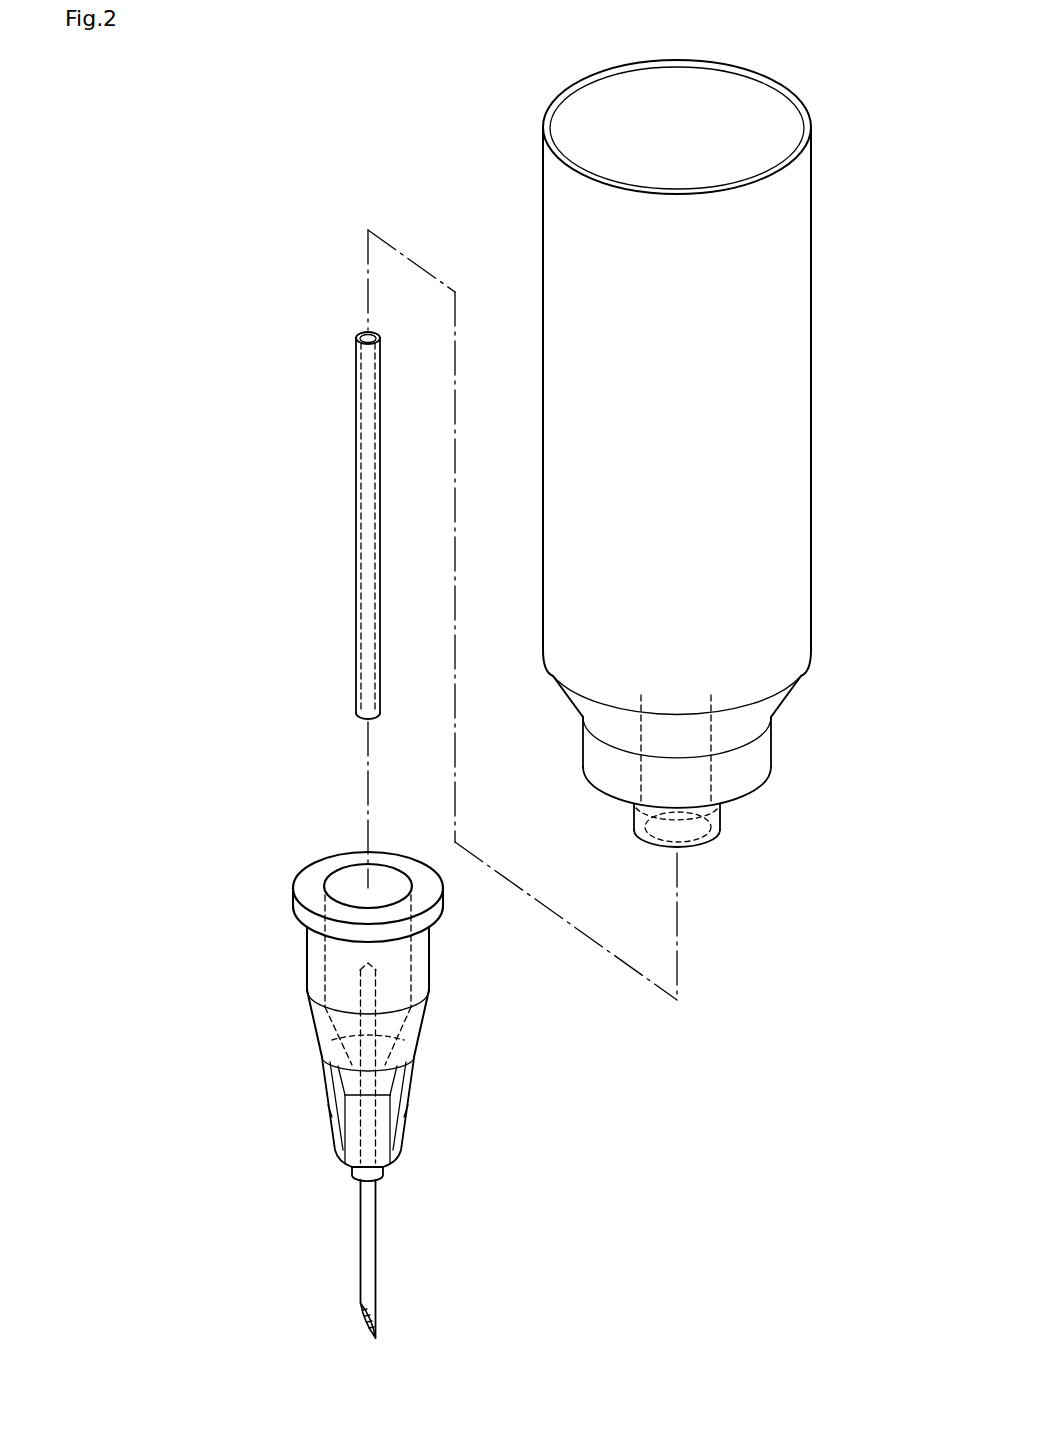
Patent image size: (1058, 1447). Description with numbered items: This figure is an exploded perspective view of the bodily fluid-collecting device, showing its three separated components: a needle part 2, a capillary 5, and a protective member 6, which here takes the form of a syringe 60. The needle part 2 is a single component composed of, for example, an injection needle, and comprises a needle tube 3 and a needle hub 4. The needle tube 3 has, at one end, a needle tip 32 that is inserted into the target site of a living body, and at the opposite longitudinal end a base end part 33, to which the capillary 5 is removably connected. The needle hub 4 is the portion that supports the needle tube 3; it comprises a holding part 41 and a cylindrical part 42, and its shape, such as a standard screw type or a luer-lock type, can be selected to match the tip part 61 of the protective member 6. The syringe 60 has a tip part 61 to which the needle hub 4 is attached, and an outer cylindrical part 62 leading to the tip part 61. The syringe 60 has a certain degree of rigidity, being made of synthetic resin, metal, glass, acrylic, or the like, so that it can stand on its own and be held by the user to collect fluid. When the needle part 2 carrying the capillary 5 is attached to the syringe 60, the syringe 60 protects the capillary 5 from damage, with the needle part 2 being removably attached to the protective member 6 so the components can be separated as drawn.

The needle part 2 is at (365, 1105).
The needle tube 3 is at (356, 1269).
The needle tip 32 is at (365, 1323).
The base end part 33 is at (367, 1035).
The needle hub 4 is at (396, 1036).
The holding part 41 is at (355, 1163).
The cylindrical part 42 is at (423, 952).
The capillary 5 is at (342, 490).
The protective member 6 is at (743, 467).
The syringe 60 is at (743, 467).
The tip part 61 is at (719, 835).
The outer cylindrical part 62 is at (785, 497).